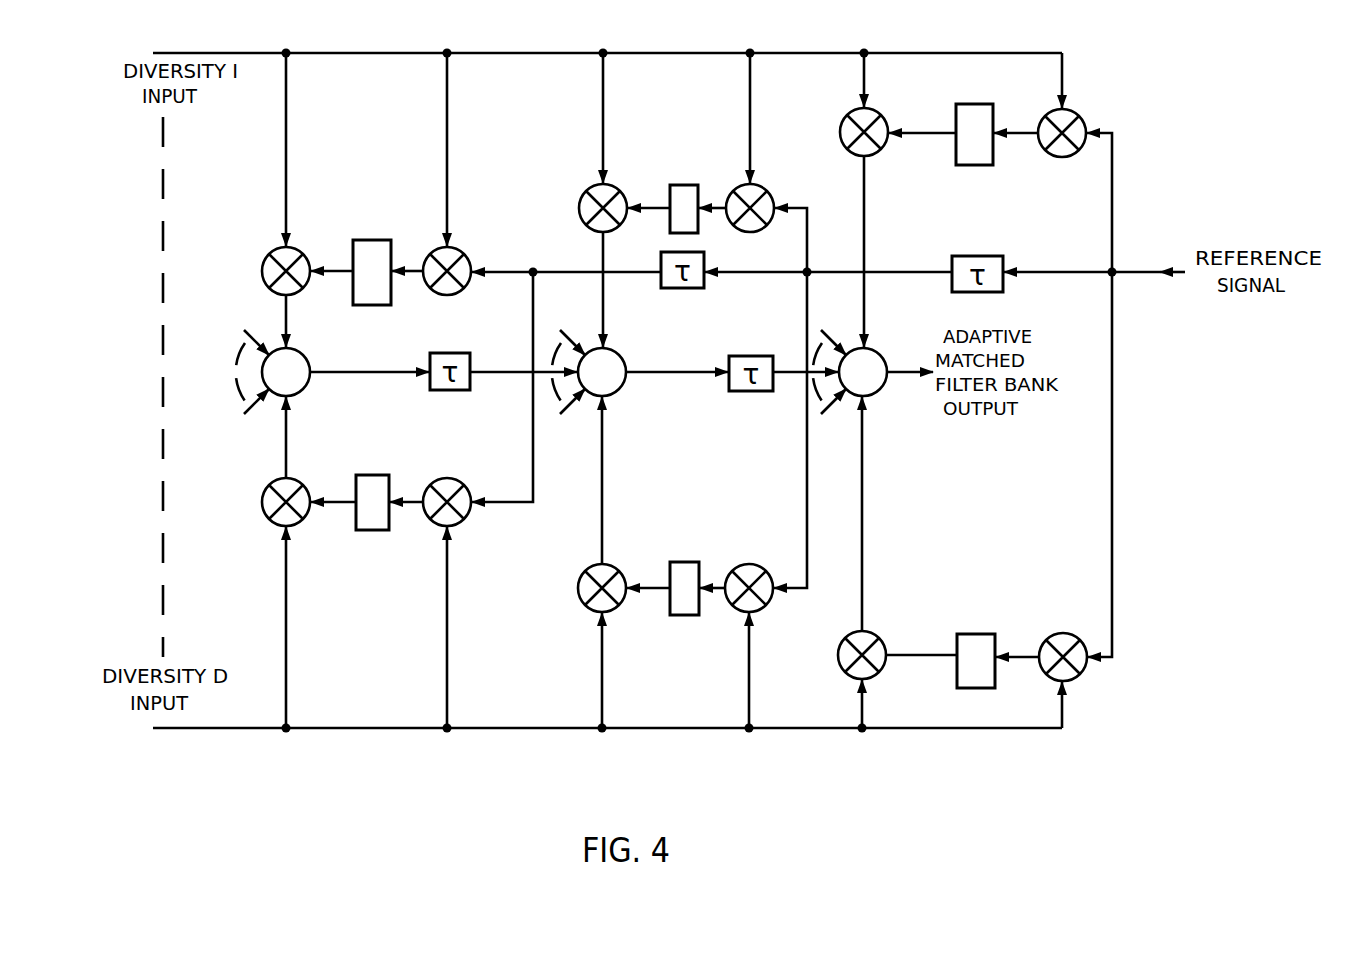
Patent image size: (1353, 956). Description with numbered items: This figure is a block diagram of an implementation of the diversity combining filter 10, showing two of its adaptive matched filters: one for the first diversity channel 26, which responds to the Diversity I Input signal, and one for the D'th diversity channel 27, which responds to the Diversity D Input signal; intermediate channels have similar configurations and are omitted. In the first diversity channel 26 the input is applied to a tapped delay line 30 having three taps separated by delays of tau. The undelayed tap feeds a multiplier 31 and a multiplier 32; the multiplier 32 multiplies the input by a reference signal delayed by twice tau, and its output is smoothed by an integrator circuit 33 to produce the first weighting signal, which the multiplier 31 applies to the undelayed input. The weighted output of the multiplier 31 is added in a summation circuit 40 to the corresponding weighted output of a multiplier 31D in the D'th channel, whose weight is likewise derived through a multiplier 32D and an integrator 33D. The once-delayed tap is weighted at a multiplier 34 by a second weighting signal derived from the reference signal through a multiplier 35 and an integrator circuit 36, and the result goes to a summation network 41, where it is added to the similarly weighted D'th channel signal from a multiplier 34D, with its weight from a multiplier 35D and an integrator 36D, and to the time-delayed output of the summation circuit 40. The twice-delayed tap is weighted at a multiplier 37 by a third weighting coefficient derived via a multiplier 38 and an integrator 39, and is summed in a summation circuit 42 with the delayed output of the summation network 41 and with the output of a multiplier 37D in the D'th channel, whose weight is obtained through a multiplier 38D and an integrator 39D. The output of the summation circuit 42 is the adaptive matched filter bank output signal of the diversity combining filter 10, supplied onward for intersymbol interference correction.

The diversity combining filter 10 is at (607, 462).
The first diversity channel 26 is at (1122, 157).
The D'th diversity channel 27 is at (1128, 628).
The tapped delay line 30 is at (948, 40).
The multiplier 31 is at (262, 271).
The multiplier 32 is at (464, 254).
The integrator circuit 33 is at (374, 240).
The multiplier 34 is at (580, 205).
The multiplier 35 is at (766, 191).
The integrator circuit 36 is at (685, 185).
The multiplier 37 is at (841, 131).
The multiplier 38 is at (1079, 116).
The integrator 39 is at (971, 104).
The summer 40 is at (304, 358).
The summation network 41 is at (620, 358).
The summation circuit 42 is at (882, 354).
The multiplier 31D is at (269, 485).
The multiplier (diversity D) 32D is at (464, 486).
The integrator (diversity D) 33D is at (376, 475).
The multiplier (diversity D) 34D is at (579, 580).
The multiplier (diversity D) 35D is at (760, 567).
The integrator (diversity D) 36D is at (685, 562).
The multiplier 37D is at (838, 652).
The multiplier (diversity D) 38D is at (1062, 633).
The integrator (diversity D) 39D is at (973, 634).